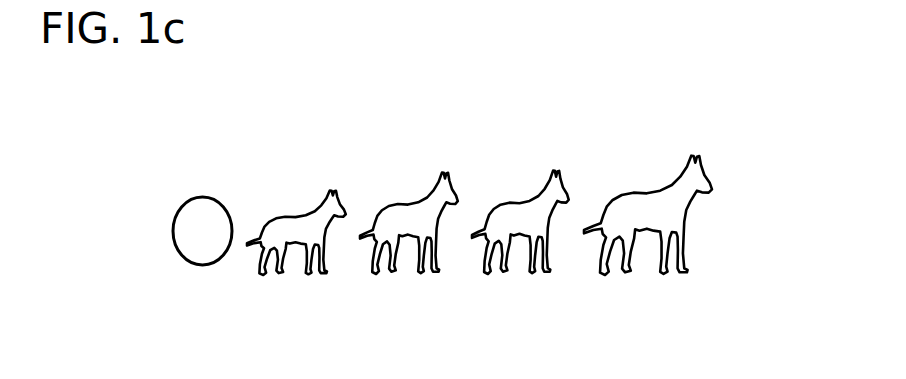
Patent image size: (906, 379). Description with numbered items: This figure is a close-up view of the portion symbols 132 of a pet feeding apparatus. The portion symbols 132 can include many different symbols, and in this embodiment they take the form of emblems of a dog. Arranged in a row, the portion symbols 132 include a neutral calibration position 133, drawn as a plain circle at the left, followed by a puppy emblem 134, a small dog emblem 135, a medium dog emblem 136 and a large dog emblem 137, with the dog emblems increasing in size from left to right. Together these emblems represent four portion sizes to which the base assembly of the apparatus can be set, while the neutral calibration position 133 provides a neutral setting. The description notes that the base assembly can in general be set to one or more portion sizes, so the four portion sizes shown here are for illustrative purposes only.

The portion symbols 132 is at (145, 158).
The neutral calibration position 133 is at (185, 235).
The puppy emblem 134 is at (290, 228).
The small dog emblem 135 is at (410, 215).
The medium dog emblem 136 is at (522, 217).
The large dog emblem 137 is at (682, 217).